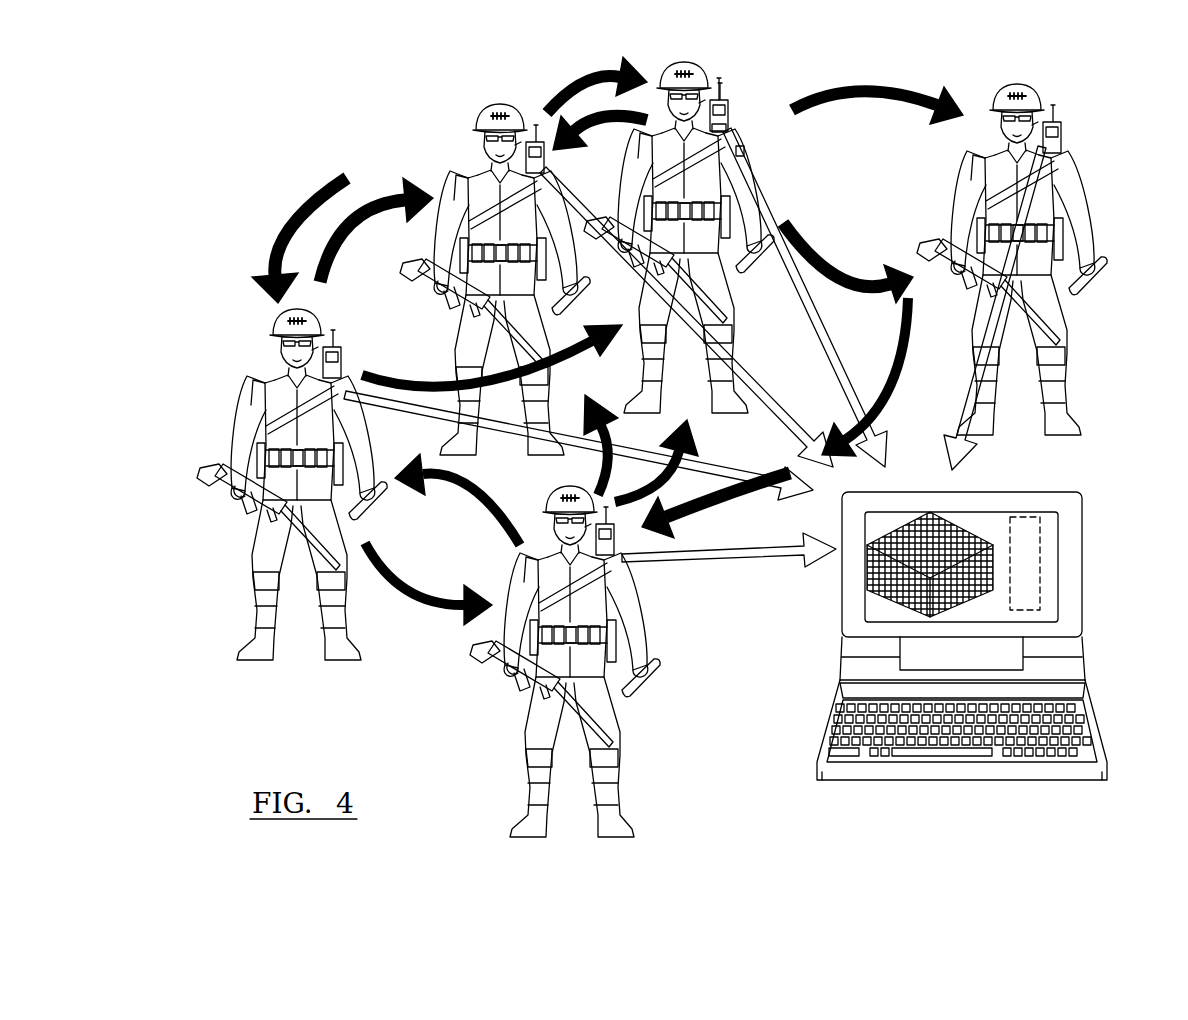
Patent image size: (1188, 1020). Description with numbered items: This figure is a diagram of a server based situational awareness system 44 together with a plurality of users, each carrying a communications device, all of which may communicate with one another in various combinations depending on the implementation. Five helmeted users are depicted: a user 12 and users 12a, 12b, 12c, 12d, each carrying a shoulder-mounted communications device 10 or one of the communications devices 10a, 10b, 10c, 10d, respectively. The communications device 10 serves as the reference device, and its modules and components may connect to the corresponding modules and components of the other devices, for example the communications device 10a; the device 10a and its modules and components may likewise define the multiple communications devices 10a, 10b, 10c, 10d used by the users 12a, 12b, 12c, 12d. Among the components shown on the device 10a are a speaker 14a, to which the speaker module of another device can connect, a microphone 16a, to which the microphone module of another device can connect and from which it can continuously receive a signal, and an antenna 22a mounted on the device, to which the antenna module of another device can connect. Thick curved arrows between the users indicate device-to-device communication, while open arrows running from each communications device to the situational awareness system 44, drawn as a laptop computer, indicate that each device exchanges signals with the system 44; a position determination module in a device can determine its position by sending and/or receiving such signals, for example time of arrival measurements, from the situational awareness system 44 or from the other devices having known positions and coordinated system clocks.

The communications device 10 is at (1074, 126).
The communications device 10a is at (739, 103).
The communications device 10b is at (532, 122).
The communications device 10c is at (353, 362).
The communications device 10d is at (625, 542).
The user 12 is at (1040, 259).
The user 12a is at (711, 231).
The user 12b is at (476, 254).
The user 12c is at (292, 484).
The user 12d is at (599, 661).
The speaker 14a is at (745, 152).
The microphone 16a is at (731, 128).
The antenna 22a is at (725, 86).
The situational awareness system 44 is at (812, 671).